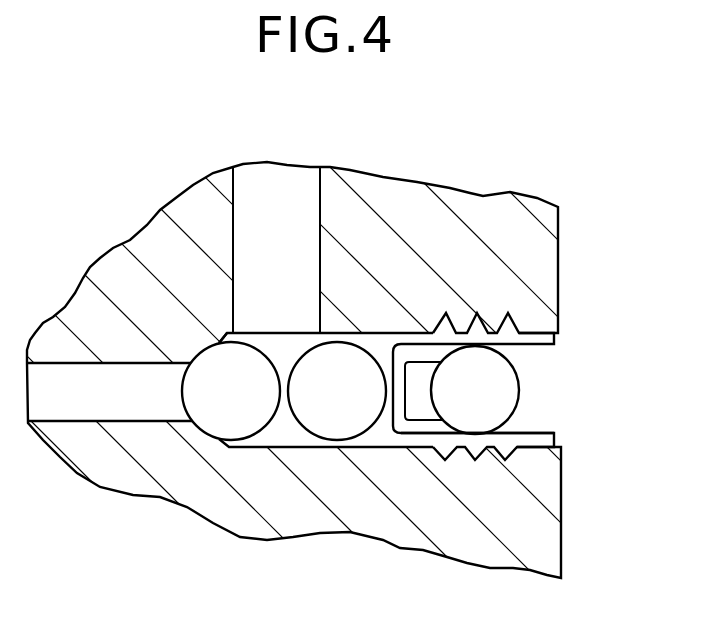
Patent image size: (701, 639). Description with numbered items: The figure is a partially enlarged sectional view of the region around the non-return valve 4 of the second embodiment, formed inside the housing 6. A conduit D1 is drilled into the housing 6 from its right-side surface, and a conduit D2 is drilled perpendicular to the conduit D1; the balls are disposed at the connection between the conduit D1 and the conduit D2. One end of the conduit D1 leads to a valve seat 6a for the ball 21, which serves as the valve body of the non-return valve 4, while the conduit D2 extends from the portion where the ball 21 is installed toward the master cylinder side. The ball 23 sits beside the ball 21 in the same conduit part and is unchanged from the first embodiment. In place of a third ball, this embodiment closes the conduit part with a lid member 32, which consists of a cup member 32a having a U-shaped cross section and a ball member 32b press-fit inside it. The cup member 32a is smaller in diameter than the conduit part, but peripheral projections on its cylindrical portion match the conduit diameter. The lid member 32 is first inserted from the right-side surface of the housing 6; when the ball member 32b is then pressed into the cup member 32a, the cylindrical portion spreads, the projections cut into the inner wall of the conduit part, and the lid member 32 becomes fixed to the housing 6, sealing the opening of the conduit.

The non-return valve 4 is at (397, 411).
The housing 6 is at (563, 203).
The valve seat 6a is at (203, 339).
The ball 21 is at (218, 415).
The ball 23 is at (340, 418).
The lid member 32 is at (523, 468).
The cup member 32a is at (525, 438).
The ball member 32b is at (492, 380).
The conduit D1 is at (78, 408).
The conduit D2 is at (338, 195).